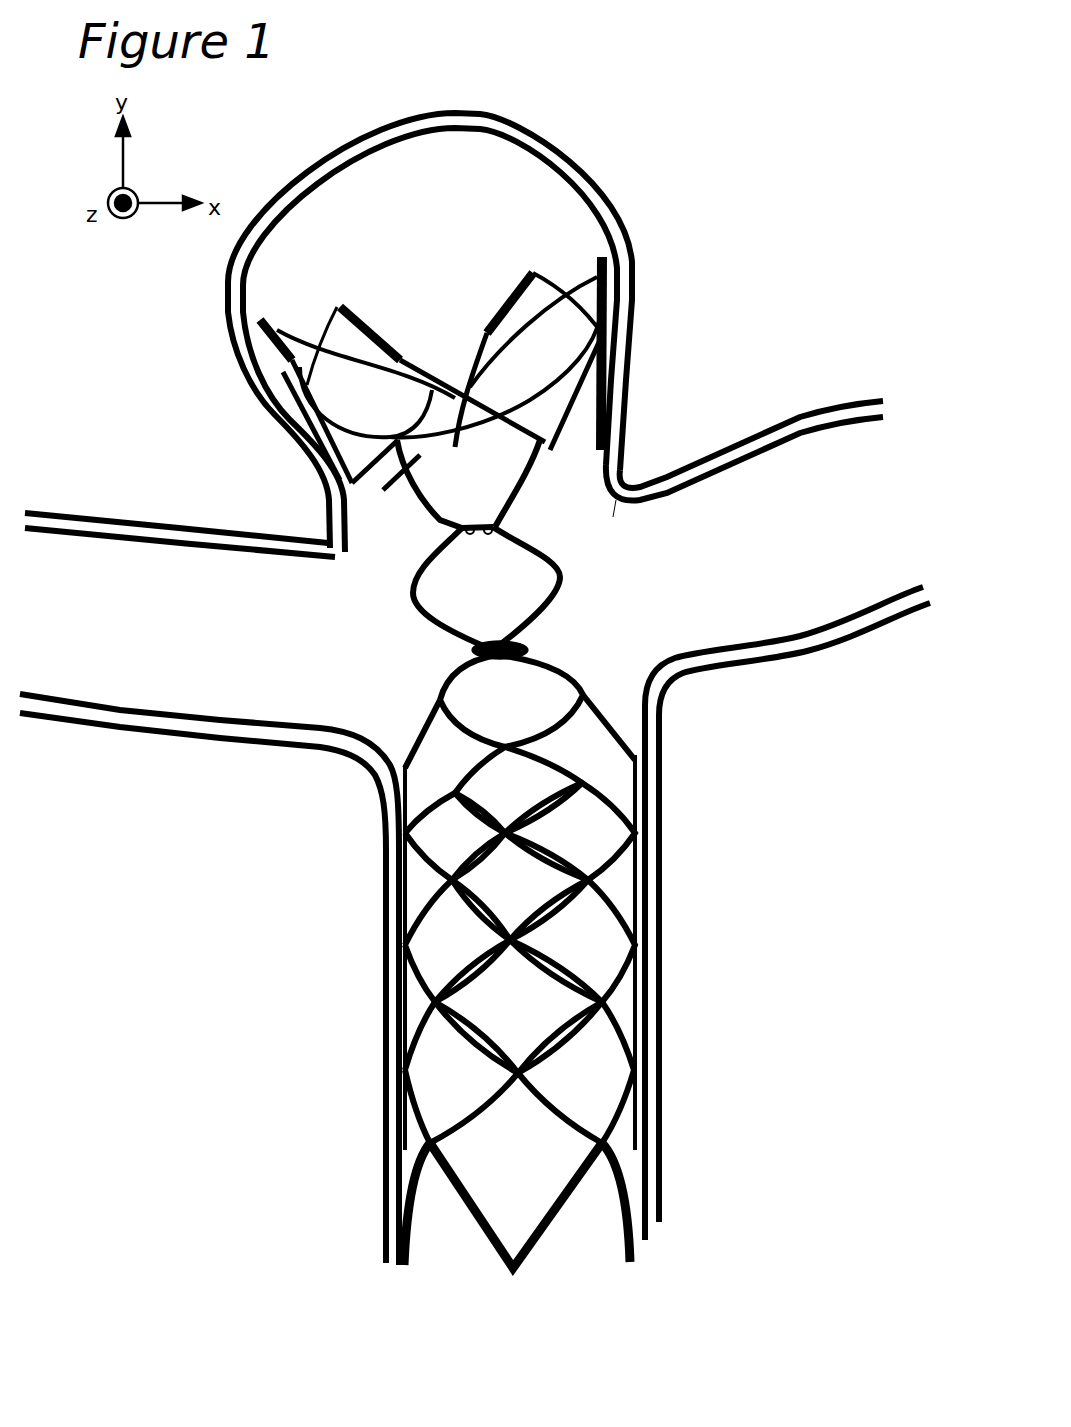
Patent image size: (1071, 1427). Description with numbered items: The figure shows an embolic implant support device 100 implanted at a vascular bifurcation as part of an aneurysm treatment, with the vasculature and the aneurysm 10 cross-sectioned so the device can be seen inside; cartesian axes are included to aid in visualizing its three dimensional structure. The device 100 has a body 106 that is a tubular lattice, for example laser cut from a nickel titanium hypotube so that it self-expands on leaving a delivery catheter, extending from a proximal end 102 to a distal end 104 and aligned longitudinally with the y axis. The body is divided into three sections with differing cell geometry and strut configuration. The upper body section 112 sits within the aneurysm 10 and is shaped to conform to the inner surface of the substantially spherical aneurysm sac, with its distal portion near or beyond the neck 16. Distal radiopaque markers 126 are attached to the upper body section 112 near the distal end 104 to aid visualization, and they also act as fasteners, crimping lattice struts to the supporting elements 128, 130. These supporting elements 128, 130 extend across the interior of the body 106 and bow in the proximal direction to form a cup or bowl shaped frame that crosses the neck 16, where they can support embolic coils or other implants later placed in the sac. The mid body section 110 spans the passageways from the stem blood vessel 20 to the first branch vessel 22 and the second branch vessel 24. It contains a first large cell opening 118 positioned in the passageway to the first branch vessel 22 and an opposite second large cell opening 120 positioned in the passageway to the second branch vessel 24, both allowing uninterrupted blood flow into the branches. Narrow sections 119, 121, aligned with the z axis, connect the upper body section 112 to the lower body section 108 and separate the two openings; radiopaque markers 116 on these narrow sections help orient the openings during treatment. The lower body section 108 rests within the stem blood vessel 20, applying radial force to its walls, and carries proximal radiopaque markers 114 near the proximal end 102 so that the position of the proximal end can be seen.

The aneurysm 10 is at (616, 202).
The neck 16 is at (613, 513).
The stem blood vessel 20 is at (652, 948).
The first branch vessel 22 is at (50, 512).
The second branch vessel 24 is at (803, 417).
The embolic implant support device 100 is at (300, 333).
The proximal end 102 is at (636, 1262).
The distal end 104 is at (614, 260).
The body 106 is at (637, 808).
The lower body section 108 is at (514, 1026).
The mid body section 110 is at (437, 604).
The upper body section 112 is at (425, 371).
The proximal radiopaque markers 114 is at (487, 1240).
The radiopaque markers 116 is at (555, 735).
The first large cell opening 118 is at (413, 589).
The narrow section 119 is at (513, 543).
The second large cell opening 120 is at (565, 588).
The narrow section 121 is at (543, 560).
The distal radiopaque markers 126 is at (263, 317).
The supporting element 128 is at (620, 347).
The supporting element 130 is at (473, 367).